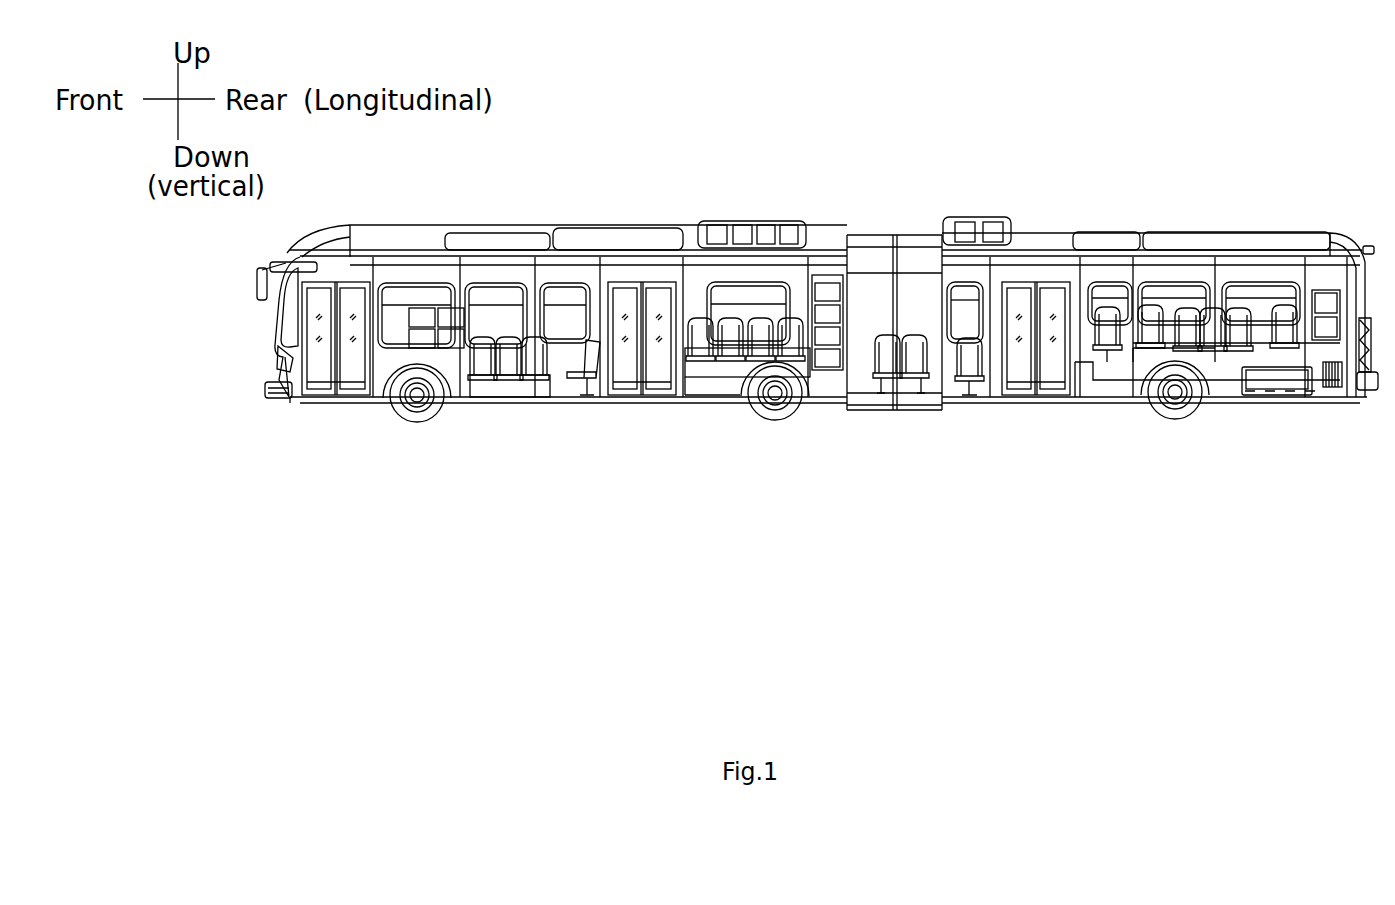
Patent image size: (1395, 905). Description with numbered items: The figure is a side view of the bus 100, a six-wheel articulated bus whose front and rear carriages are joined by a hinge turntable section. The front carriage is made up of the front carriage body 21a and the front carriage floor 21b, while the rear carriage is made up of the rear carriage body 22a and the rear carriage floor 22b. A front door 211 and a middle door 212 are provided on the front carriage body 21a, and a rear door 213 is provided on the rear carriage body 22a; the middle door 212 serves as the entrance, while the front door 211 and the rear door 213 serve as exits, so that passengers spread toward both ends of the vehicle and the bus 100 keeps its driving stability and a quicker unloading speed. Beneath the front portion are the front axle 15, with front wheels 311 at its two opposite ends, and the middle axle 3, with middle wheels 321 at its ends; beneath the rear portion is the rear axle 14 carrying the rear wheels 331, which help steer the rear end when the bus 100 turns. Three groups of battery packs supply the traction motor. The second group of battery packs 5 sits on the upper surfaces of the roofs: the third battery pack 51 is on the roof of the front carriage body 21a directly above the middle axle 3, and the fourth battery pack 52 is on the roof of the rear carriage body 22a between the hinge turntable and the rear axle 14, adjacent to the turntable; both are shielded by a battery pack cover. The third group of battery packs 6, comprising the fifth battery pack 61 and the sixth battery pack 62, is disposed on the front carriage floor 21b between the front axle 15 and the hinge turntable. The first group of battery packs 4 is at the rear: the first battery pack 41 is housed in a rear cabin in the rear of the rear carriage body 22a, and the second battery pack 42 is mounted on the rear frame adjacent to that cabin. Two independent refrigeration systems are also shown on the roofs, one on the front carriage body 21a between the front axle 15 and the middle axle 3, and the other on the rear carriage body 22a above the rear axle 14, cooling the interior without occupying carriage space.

The bus 100 is at (629, 59).
The second group of battery packs 5 is at (927, 141).
The third battery pack 51 is at (768, 232).
The fourth battery pack 52 is at (990, 228).
The front carriage body 21a is at (568, 275).
The front carriage floor 21b is at (428, 333).
The rear carriage body 22a is at (1255, 272).
The rear carriage floor 22b is at (1087, 365).
The front door 211 is at (315, 382).
The middle door 212 is at (623, 373).
The rear door 213 is at (1018, 375).
The front axle 15 is at (418, 405).
The front wheels 311 is at (425, 405).
The middle axle 3 is at (765, 400).
The middle wheels 321 is at (768, 410).
The rear axle 14 is at (1178, 395).
The rear wheels 331 is at (1160, 410).
The third group of battery packs 6 is at (737, 542).
The fifth battery pack 61 is at (505, 393).
The sixth battery pack 62 is at (828, 362).
The first group of battery packs 4 is at (1342, 470).
The first battery pack 41 is at (1327, 327).
The second battery pack 42 is at (1263, 380).